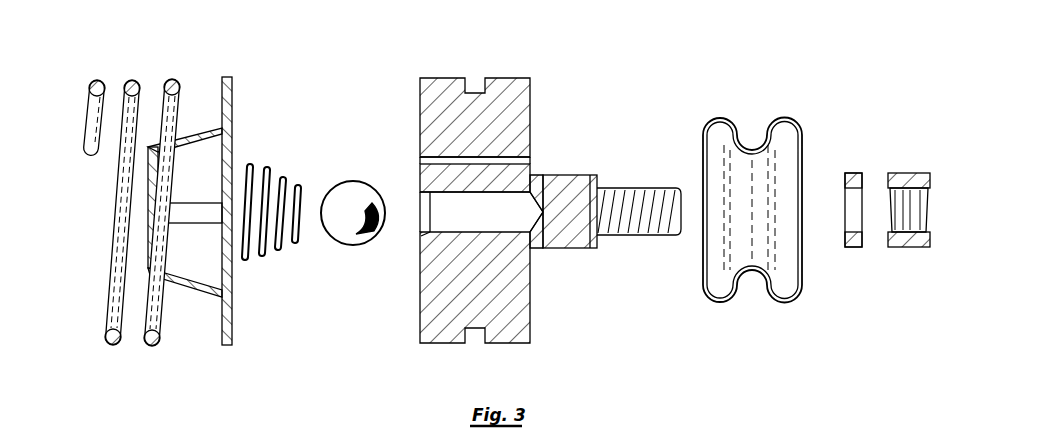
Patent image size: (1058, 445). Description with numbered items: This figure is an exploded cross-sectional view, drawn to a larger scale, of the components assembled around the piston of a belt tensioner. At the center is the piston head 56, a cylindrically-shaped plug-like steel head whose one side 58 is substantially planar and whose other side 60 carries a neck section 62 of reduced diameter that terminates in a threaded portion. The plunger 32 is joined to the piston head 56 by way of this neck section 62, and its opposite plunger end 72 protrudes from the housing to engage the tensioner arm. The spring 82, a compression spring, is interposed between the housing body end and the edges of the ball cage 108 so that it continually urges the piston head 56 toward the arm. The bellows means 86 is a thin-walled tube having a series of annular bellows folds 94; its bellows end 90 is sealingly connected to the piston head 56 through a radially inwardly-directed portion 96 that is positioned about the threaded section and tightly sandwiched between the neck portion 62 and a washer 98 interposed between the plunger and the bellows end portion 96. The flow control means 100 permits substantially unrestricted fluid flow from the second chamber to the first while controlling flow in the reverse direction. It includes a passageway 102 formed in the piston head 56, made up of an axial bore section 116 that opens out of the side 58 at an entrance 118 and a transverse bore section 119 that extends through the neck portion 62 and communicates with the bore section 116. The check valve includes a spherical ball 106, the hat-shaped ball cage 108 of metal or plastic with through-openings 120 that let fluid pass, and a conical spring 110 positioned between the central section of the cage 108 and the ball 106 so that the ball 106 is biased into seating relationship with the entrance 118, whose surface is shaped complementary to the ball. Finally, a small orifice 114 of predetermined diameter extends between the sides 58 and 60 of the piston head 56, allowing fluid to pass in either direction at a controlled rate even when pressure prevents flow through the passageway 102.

The plunger 32 is at (898, 175).
The piston head 56 is at (468, 189).
The piston head side 58 is at (420, 98).
The piston head side 60 is at (531, 100).
The neck section 62 is at (605, 213).
The plunger end 72 is at (912, 213).
The spring 82 is at (172, 79).
The bellows means 86 is at (727, 203).
The bellows end 90 is at (718, 120).
The bellows folds 94 is at (782, 302).
The radially inwardly-directed portion 96 is at (702, 255).
The washer 98 is at (847, 248).
The flow control means 100 is at (350, 105).
The passageway 102 is at (531, 214).
The spherical ball 106 is at (345, 233).
The ball cage 108 is at (197, 290).
The conical spring 110 is at (278, 252).
The orifice 114 is at (422, 161).
The axial bore section 116 is at (452, 232).
The entrance 118 is at (422, 191).
The transverse bore section 119 is at (532, 175).
The through-openings 120 is at (213, 167).